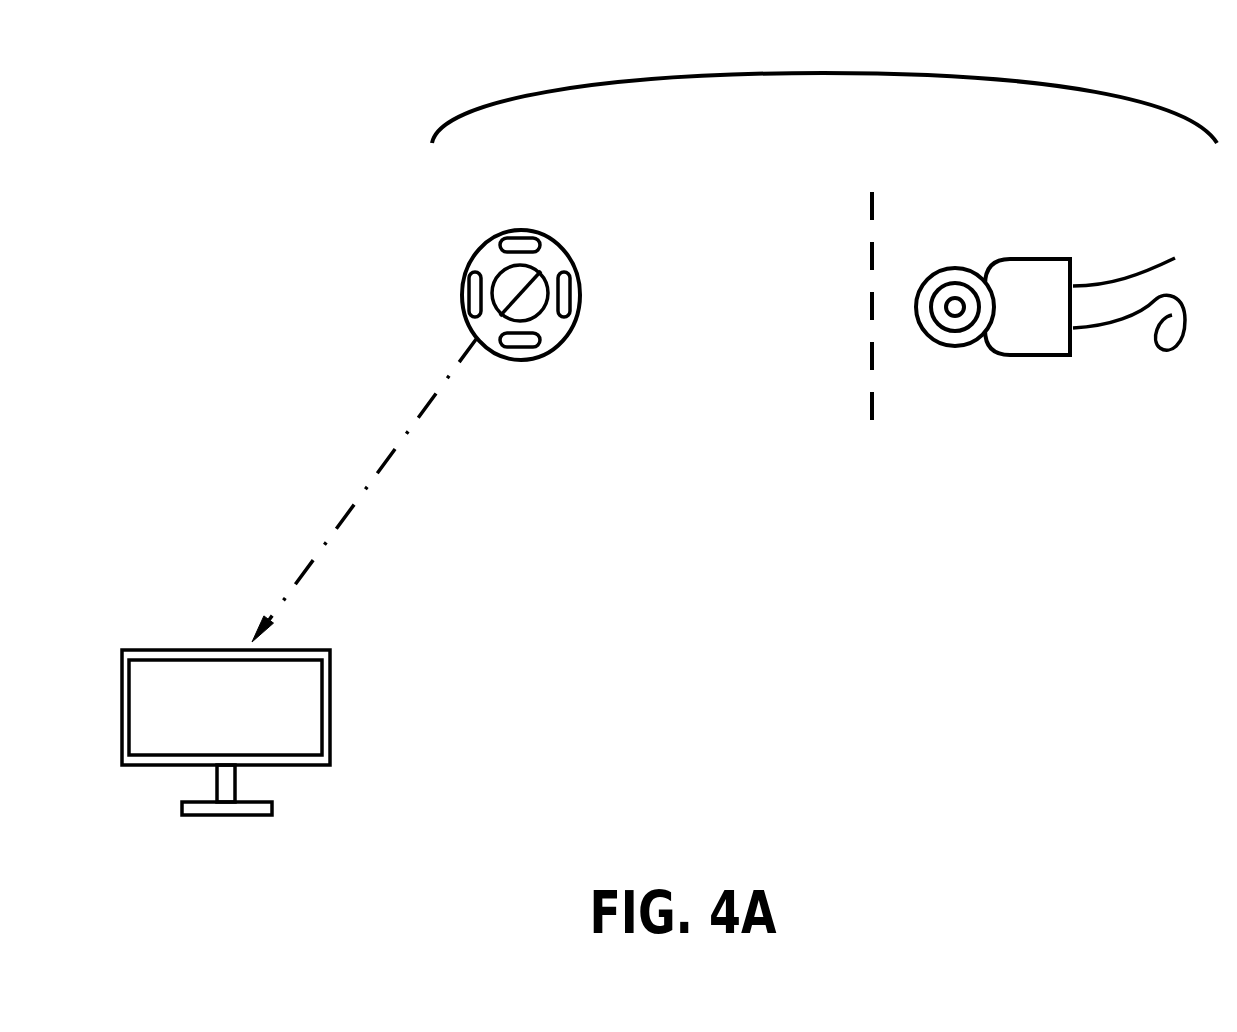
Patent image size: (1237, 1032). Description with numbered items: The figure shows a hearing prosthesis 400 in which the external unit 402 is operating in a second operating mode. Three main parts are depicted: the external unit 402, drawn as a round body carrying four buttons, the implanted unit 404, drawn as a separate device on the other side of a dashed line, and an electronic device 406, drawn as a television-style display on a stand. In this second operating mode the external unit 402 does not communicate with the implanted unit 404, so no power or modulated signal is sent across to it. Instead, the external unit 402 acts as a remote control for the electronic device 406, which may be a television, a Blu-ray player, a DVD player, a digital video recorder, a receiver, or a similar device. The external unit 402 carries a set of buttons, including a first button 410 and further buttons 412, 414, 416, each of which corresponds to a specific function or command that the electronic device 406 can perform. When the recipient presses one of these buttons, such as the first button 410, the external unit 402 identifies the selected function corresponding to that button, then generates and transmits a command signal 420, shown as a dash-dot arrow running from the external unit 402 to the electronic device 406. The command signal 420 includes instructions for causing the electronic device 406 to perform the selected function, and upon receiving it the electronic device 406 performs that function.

The hearing prosthesis 400 is at (823, 73).
The external unit 402 is at (499, 295).
The implanted unit 404 is at (1038, 259).
The electronic device 406 is at (330, 715).
The first button 410 is at (510, 233).
The button 412 is at (560, 250).
The button 414 is at (518, 350).
The button 416 is at (464, 285).
The command signal 420 is at (332, 532).